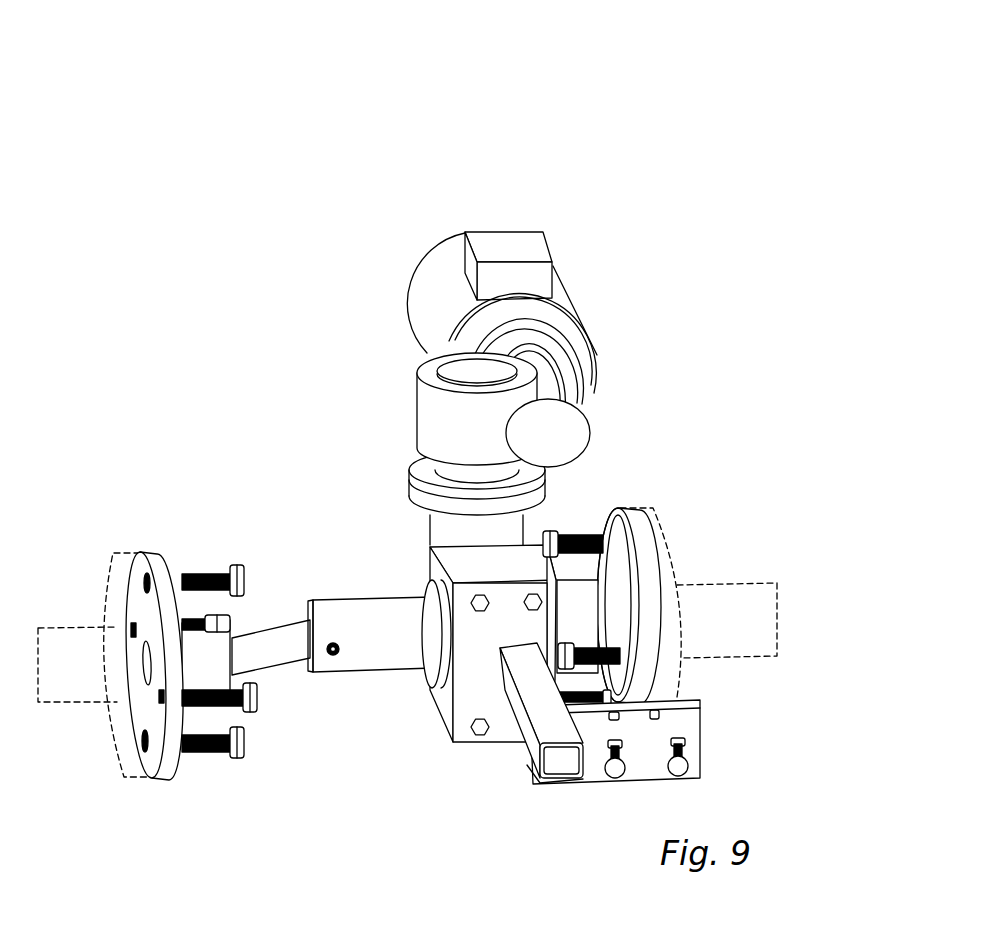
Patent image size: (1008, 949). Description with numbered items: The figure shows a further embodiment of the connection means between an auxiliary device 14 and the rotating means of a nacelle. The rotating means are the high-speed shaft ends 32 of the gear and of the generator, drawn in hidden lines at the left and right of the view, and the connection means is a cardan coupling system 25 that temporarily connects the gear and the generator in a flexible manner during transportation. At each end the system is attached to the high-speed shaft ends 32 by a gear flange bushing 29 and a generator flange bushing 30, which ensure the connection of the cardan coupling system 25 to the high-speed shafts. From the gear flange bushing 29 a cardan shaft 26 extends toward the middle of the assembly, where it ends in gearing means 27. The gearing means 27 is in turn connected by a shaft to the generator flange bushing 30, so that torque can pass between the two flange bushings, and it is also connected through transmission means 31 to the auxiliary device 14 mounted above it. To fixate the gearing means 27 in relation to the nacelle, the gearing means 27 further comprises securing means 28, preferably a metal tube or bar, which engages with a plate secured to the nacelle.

The cardan coupling system 25 is at (637, 190).
The auxiliary device 14 is at (417, 328).
The transmission means 31 is at (417, 417).
The cardan shaft 26 is at (360, 597).
The gearing means 27 is at (440, 718).
The securing means 28 is at (527, 740).
The gear flange bushing 29 is at (150, 552).
The generator flange bushing 30 is at (620, 510).
The high-speed shaft ends 32 is at (57, 645).